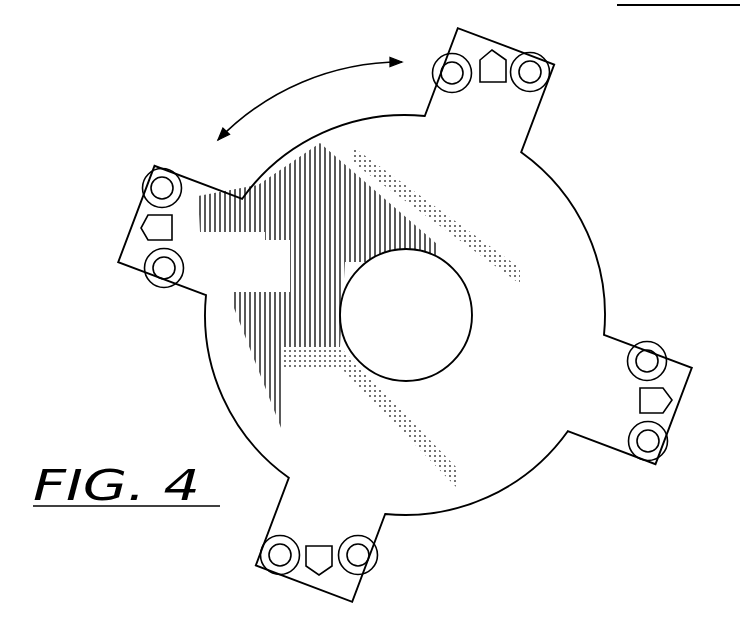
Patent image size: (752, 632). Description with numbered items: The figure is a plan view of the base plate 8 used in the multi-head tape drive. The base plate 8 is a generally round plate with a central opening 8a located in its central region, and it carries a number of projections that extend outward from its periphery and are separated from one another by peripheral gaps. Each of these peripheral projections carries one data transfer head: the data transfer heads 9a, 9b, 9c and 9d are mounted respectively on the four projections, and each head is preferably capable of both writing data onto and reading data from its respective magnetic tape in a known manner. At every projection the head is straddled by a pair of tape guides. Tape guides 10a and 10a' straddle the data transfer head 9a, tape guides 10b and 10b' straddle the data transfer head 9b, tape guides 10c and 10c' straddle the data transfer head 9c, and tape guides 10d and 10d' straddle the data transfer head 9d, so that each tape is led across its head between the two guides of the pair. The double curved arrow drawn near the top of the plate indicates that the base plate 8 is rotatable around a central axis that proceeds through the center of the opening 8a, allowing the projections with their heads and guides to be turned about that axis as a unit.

The base plate 8 is at (515, 223).
The central opening 8a is at (437, 314).
The data transfer head 9a is at (162, 229).
The data transfer head 9b is at (318, 556).
The data transfer head 9c is at (640, 399).
The data transfer head 9d is at (492, 72).
The tape guide 10a is at (134, 293).
The tape guide 10a' is at (121, 172).
The tape guide 10b is at (402, 557).
The tape guide 10b' is at (256, 581).
The tape guide 10c is at (665, 333).
The tape guide 10c' is at (630, 474).
The tape guide 10d is at (411, 49).
The tape guide 10d' is at (550, 53).